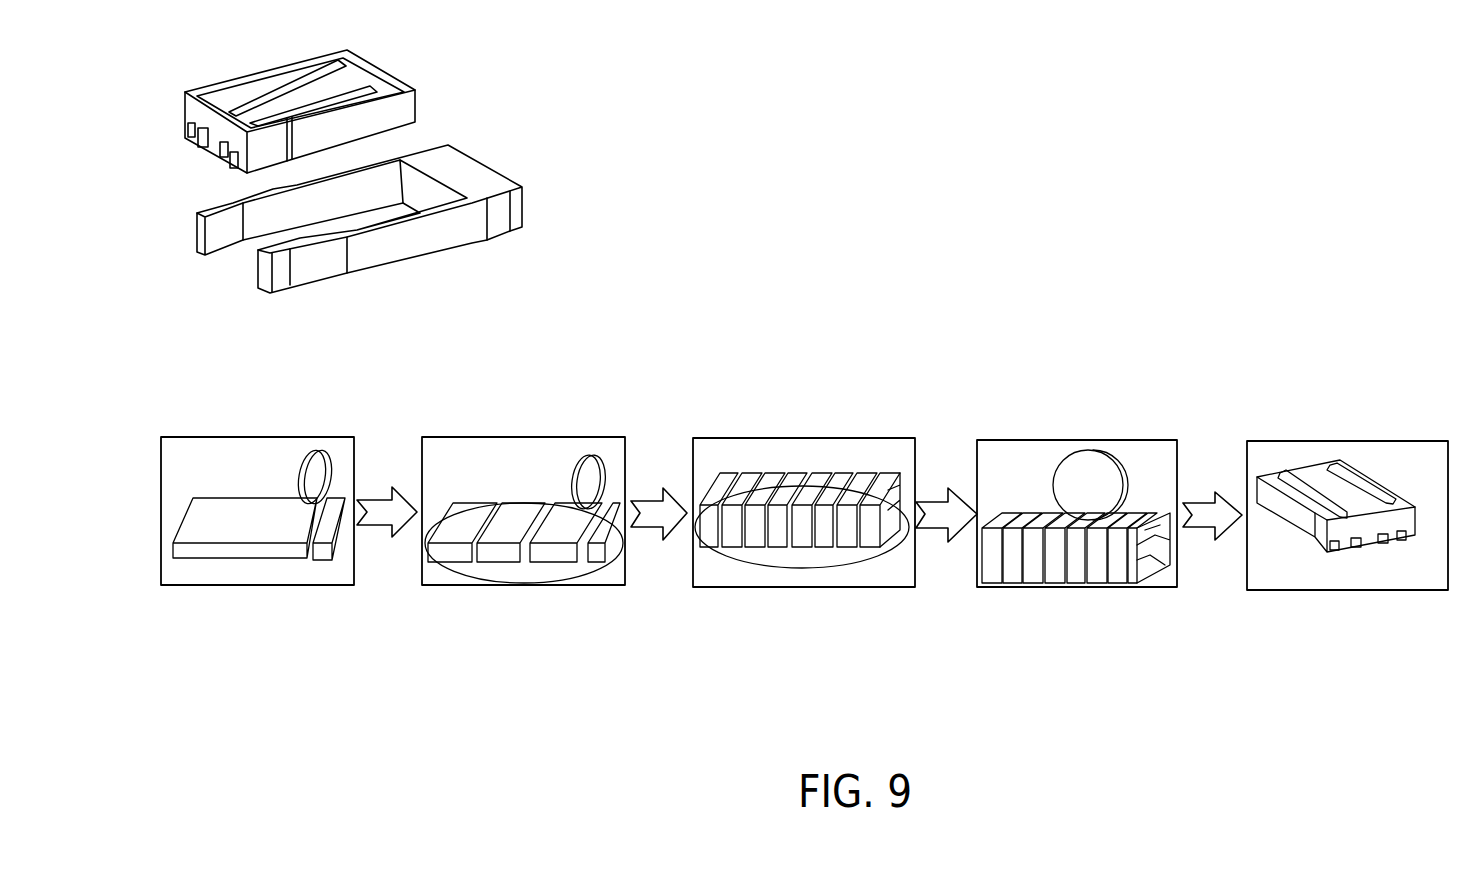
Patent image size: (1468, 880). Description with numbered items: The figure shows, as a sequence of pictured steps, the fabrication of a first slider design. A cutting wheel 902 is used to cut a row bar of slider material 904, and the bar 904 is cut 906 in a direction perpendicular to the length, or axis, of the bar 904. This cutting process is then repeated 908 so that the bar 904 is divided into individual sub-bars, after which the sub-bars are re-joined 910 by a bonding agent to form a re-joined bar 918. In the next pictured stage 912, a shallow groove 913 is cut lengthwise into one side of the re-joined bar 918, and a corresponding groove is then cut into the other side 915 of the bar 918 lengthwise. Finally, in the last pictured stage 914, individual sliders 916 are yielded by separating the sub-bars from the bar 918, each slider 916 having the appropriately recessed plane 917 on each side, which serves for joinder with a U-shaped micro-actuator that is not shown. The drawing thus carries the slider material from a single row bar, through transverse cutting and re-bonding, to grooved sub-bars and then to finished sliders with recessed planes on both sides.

The cutting wheel 902 is at (320, 470).
The row bar of slider material 904 is at (257, 510).
The cutting step 906 is at (247, 592).
The repeating step 908 is at (523, 590).
The re-joining step 910 is at (808, 592).
The assembly step 912 is at (1053, 593).
The shallow groove 913 is at (1142, 527).
The final component step 914 is at (1377, 597).
The other side of the bar 915 is at (1155, 563).
The slider 916 is at (1318, 477).
The recessed plane 917 is at (1400, 495).
The re-joined bar 918 is at (1075, 563).